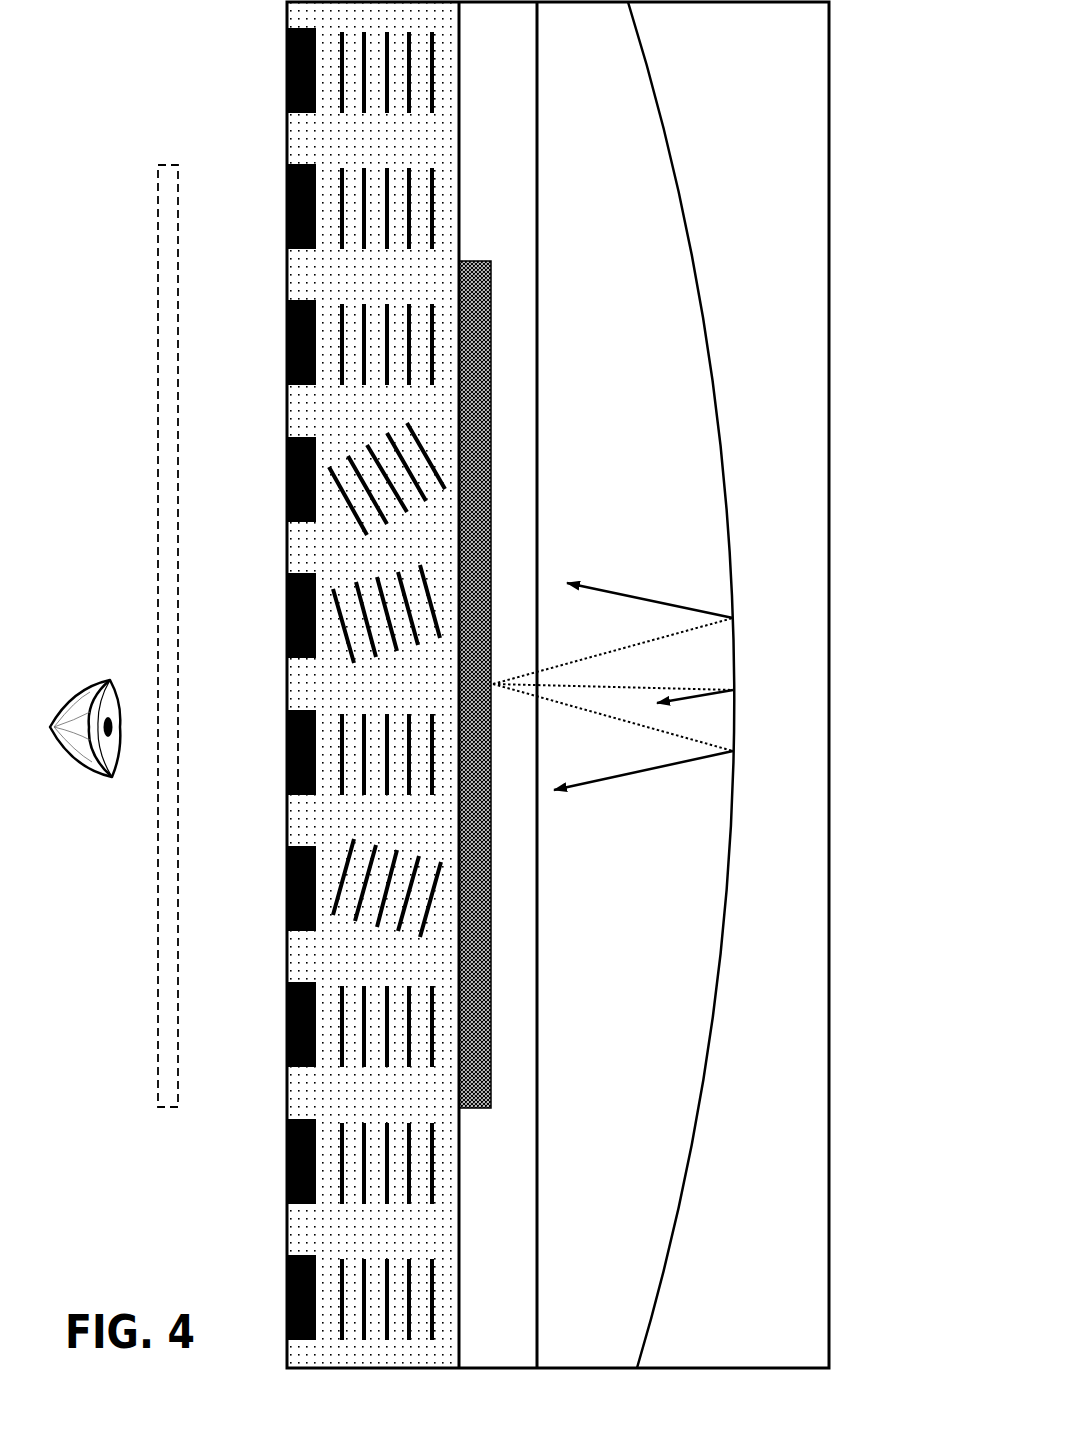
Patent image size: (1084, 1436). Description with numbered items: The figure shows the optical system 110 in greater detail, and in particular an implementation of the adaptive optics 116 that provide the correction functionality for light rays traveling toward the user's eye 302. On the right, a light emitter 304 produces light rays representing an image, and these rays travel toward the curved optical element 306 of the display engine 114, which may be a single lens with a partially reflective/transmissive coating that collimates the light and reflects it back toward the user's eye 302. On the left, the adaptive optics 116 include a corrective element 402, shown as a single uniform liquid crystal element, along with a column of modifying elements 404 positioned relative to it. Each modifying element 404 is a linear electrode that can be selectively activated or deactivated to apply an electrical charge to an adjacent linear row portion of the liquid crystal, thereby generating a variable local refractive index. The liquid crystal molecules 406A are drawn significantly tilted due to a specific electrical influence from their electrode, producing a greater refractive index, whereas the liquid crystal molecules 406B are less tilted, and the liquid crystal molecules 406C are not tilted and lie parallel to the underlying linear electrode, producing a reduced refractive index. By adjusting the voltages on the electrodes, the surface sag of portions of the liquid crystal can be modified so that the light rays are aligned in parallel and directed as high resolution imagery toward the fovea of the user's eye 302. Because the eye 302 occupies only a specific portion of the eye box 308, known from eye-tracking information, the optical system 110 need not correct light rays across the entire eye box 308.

The optical system 110 is at (879, 58).
The display engine 114 is at (594, 1).
The adaptive optics 116 is at (460, 35).
The user's eye 302 is at (118, 690).
The light emitter 304 is at (476, 262).
The optical element 306 is at (727, 450).
The eye box 308 is at (158, 923).
The corrective element 402 is at (308, 131).
The modifying elements 404 is at (287, 1157).
The liquid crystal molecules 406A is at (333, 432).
The liquid crystal molecules 406B is at (333, 563).
The liquid crystal molecules 406C is at (333, 703).